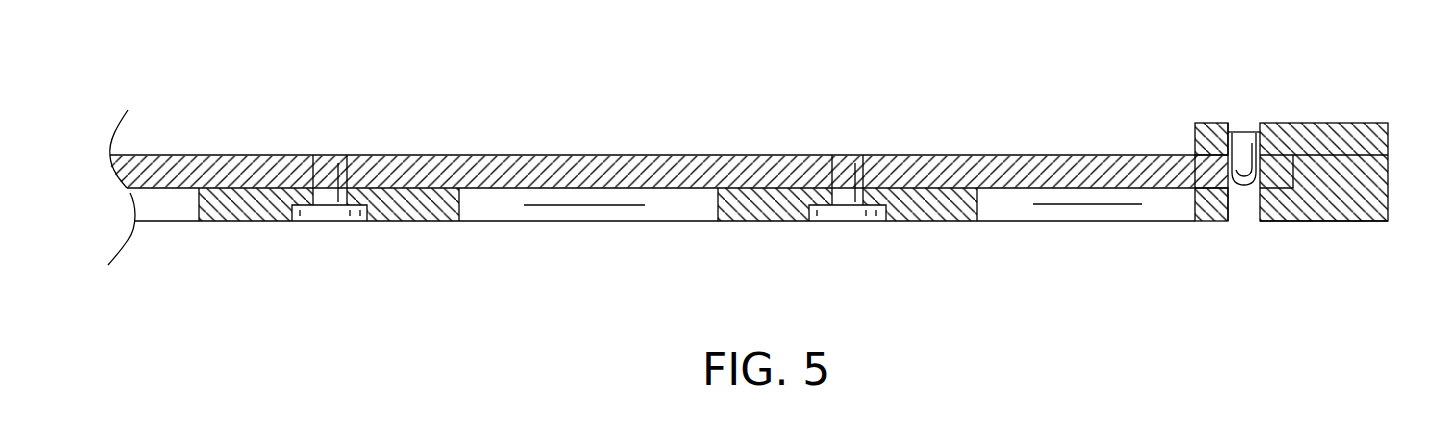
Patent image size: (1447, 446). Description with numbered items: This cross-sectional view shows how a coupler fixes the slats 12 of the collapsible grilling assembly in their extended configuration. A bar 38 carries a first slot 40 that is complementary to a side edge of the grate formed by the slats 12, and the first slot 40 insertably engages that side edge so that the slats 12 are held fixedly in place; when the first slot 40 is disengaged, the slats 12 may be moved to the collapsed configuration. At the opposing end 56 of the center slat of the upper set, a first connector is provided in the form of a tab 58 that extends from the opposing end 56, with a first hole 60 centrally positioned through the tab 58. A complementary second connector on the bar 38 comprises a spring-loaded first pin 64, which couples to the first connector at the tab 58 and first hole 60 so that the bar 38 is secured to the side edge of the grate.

The slat 12 is at (1008, 200).
The bar 38 is at (1333, 187).
The first slot 40 is at (160, 212).
The opposing end 56 is at (1155, 163).
The tab 58 is at (1213, 168).
The first hole 60 is at (1237, 198).
The first pin 64 is at (1245, 143).